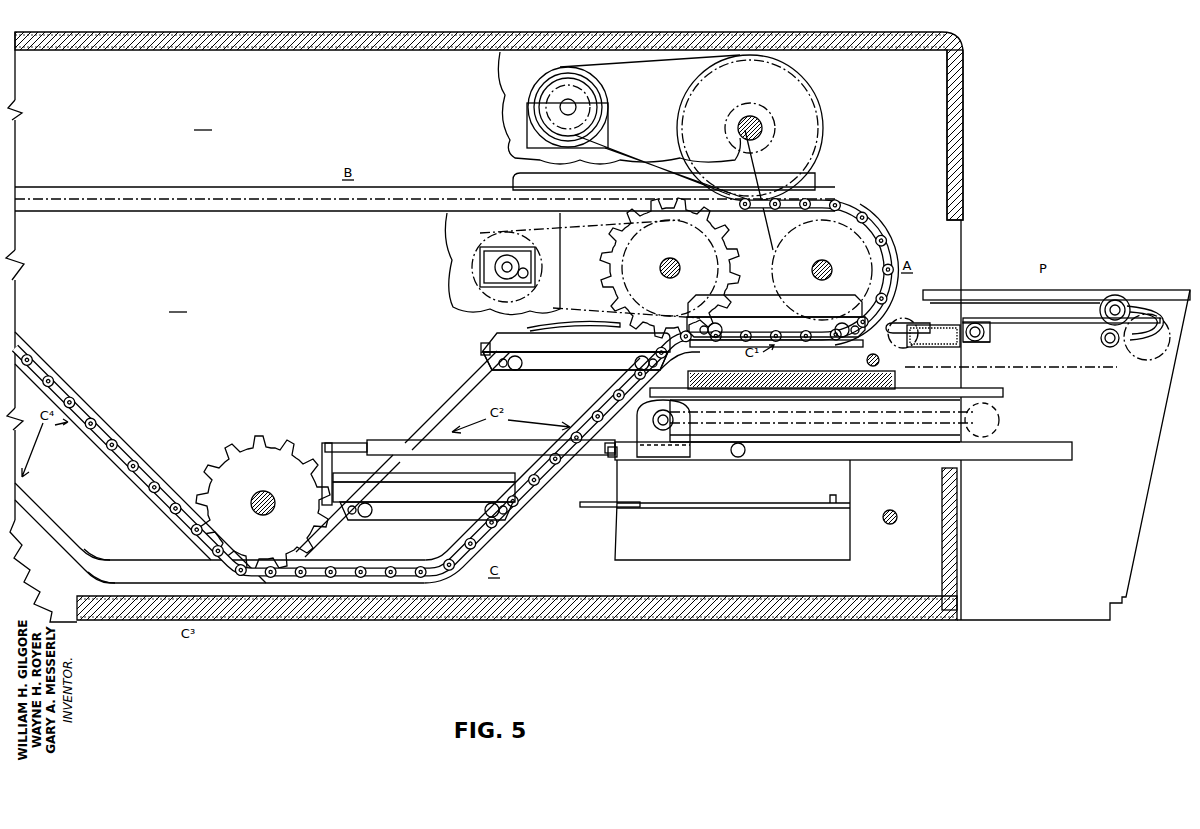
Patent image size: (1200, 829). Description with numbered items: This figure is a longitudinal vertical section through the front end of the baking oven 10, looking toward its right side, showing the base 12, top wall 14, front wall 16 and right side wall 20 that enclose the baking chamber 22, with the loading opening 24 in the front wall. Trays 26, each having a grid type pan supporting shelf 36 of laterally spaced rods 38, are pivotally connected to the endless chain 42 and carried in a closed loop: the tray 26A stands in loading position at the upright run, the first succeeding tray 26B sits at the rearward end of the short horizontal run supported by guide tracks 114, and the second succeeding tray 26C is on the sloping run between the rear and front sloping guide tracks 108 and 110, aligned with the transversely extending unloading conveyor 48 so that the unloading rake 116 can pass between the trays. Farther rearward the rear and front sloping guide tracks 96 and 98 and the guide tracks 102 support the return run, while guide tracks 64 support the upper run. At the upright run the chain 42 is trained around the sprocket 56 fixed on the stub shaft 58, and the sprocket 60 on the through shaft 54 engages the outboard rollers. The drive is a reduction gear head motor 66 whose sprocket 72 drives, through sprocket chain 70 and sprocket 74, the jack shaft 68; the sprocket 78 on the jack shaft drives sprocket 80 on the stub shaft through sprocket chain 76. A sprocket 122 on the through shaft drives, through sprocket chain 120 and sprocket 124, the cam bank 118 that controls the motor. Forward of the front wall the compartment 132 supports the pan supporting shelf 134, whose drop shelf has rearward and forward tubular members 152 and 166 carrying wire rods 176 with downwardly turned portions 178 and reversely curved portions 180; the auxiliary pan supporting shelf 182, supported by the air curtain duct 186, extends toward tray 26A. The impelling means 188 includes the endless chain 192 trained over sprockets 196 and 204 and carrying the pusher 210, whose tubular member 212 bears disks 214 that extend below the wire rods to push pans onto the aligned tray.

The baking oven 10 is at (386, 34).
The base 12 is at (553, 620).
The top wall 14 is at (296, 34).
The front wall 16 is at (965, 163).
The side wall 20 is at (203, 122).
The baking chamber 22 is at (178, 304).
The loading opening 24 is at (963, 228).
The tray 26 is at (483, 363).
The tray in loading position 26A is at (826, 296).
The first succeeding tray 26B is at (570, 370).
The second succeeding tray 26C is at (406, 522).
The pan supporting shelf 36 is at (481, 347).
The rods 38 is at (520, 350).
The endless chain 42 is at (852, 206).
The unloading conveyor 48 is at (785, 503).
The through shaft 54 is at (676, 262).
The sprocket 56 is at (776, 253).
The stub shaft 58 is at (826, 260).
The sprocket 60 is at (606, 245).
The guide tracks 64 is at (296, 212).
The reduction gear head motor 66 is at (590, 78).
The jack shaft 68 is at (742, 120).
The sprocket chain 70 is at (628, 74).
The sprocket 72 is at (541, 95).
The sprocket 74 is at (681, 103).
The sprocket chain 76 is at (812, 138).
The sprocket 78 is at (762, 112).
The sprocket 80 is at (870, 291).
The rear sloping guide track 96 is at (22, 493).
The front sloping guide track 98 is at (72, 390).
The guide tracks 102 is at (118, 556).
The rear sloping guide track 108 is at (430, 416).
The front sloping guide track 110 is at (557, 476).
The guide tracks 114 is at (780, 348).
The unloading rake 116 is at (339, 432).
The cam bank 118 is at (482, 258).
The sprocket chain 120 is at (580, 307).
The sprocket 122 is at (622, 256).
The sprocket 124 is at (491, 236).
The compartment 132 is at (1159, 432).
The pan supporting shelf 134 is at (1010, 292).
The rearward tubular member 152 is at (985, 331).
The forward tubular member 166 is at (1101, 336).
The wire rods 176 is at (985, 318).
The downwardly turned portions 178 is at (980, 343).
The reversely curved portions 180 is at (1120, 345).
The auxiliary pan supporting shelf 182 is at (938, 318).
The air curtain duct 186 is at (913, 338).
The impelling means 188 is at (1150, 300).
The endless chain 192 is at (1010, 368).
The sprocket 196 is at (1145, 360).
The sprocket 204 is at (900, 318).
The pusher 210 is at (1123, 304).
The tubular member 212 is at (1107, 298).
The disks 214 is at (1115, 300).